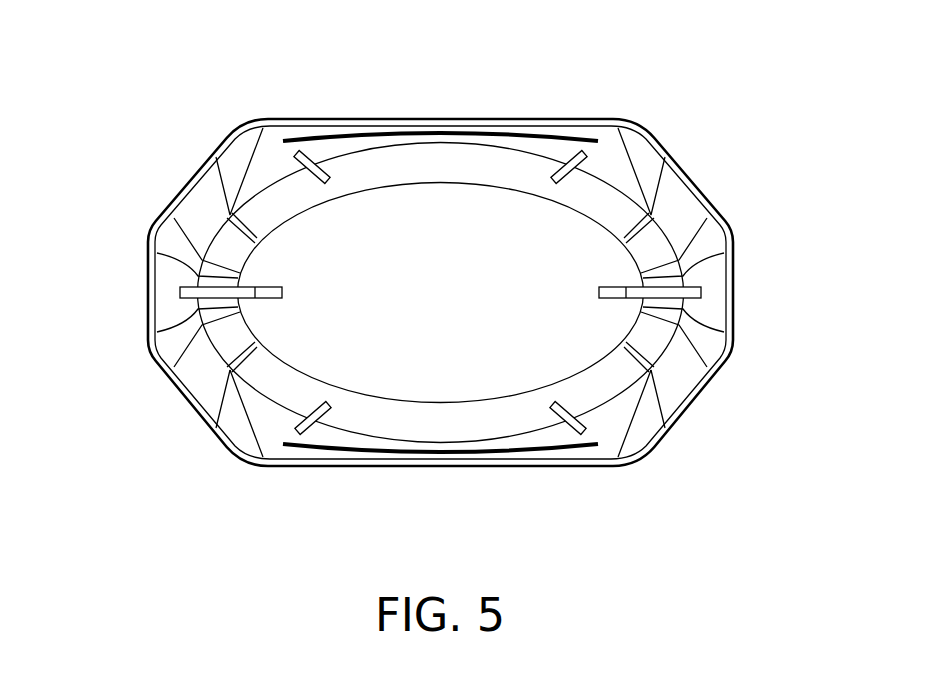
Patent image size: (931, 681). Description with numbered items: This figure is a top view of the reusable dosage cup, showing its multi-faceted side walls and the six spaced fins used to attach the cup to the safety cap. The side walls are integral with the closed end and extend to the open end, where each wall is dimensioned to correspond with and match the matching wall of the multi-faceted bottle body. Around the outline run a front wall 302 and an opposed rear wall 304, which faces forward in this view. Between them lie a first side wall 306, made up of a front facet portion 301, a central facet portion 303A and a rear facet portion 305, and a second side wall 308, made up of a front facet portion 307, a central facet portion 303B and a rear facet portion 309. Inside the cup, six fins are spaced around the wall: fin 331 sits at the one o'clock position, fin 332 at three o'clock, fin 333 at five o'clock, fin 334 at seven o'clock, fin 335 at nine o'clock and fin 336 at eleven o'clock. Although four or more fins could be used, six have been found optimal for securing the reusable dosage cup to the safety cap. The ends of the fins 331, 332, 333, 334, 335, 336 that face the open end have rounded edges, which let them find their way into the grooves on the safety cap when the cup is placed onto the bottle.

The front facet portion 301 is at (687, 155).
The front wall 302 is at (451, 119).
The central facet portion 303A is at (733, 265).
The central facet portion 303B is at (147, 265).
The rear wall 304 is at (598, 467).
The rear facet portion 305 is at (715, 378).
The first side wall 306 is at (715, 205).
The front facet portion 307 is at (180, 178).
The second side wall 308 is at (148, 330).
The rear facet portion 309 is at (197, 427).
The fin 331 is at (570, 162).
The fin 332 is at (700, 293).
The fin 333 is at (567, 423).
The fin 334 is at (318, 422).
The fin 335 is at (192, 295).
The fin 336 is at (313, 165).